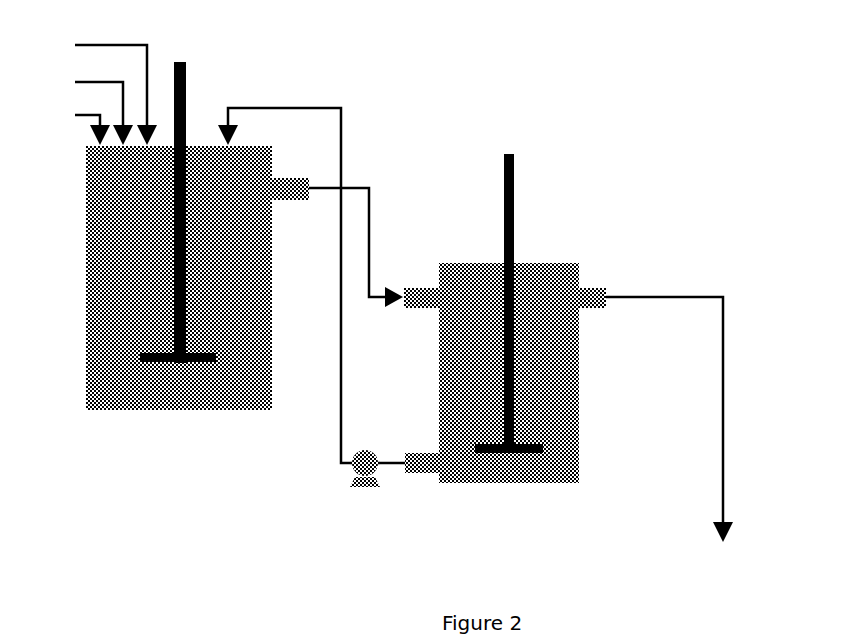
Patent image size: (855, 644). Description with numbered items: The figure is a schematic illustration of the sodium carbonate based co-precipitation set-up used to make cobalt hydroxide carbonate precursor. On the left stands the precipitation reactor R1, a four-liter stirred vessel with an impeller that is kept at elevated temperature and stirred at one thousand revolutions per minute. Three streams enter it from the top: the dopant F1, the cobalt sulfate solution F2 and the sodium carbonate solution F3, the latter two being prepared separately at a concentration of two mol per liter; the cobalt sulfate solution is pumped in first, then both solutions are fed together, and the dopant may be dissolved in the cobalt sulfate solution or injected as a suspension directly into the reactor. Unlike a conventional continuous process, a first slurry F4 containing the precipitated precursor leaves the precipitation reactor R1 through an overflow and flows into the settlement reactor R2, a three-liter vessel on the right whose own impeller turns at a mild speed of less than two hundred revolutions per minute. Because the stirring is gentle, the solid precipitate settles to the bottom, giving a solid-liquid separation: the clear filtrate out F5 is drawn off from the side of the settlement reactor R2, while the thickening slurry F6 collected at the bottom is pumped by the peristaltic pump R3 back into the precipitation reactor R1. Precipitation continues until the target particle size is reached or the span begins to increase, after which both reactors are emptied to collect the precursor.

The precipitation reactor R1 is at (197, 253).
The settlement reactor R2 is at (505, 337).
The peristaltic pump R3 is at (346, 485).
The dopant F1 is at (99, 87).
The CoSO4 F2 is at (87, 105).
The Na2CO3 F3 is at (76, 123).
The slurry F4 is at (356, 247).
The clear filtrate out F5 is at (669, 403).
The thickening slurry F6 is at (311, 285).